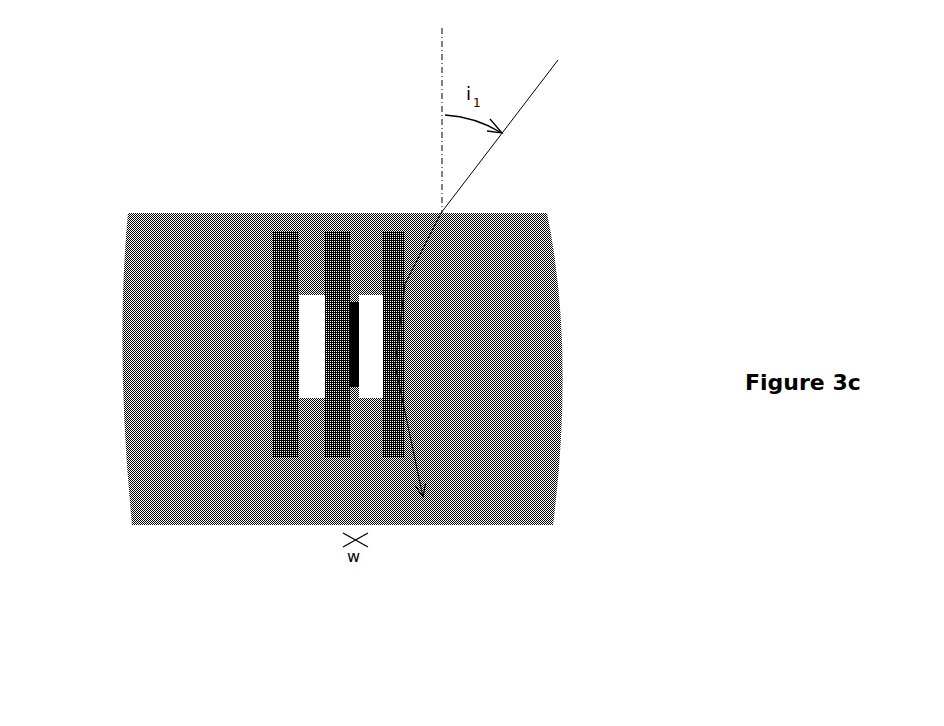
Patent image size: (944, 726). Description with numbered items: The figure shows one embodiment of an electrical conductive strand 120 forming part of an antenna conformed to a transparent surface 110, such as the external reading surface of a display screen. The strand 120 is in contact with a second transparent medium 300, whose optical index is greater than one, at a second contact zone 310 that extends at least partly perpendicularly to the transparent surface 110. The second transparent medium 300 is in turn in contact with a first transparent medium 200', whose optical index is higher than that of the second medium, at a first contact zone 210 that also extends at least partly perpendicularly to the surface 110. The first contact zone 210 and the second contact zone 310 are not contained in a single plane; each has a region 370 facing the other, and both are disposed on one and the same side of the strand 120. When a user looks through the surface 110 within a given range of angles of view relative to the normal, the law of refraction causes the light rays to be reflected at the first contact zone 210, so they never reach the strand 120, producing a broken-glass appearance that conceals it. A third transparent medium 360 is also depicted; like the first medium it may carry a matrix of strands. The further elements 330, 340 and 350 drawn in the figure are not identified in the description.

The transparent surface 110 is at (516, 528).
The electrical conductive strand 120 is at (354, 388).
The first transparent medium 200' is at (260, 486).
The first contact zone 210 is at (382, 360).
The second transparent medium 300 is at (372, 308).
The second contact zone 310 is at (360, 339).
The second high-index layer 330 is at (355, 265).
The first high-index layer 340 is at (305, 264).
The low-index cladding region 350 is at (430, 297).
The third transparent medium 360 is at (528, 438).
The region 370 is at (243, 352).